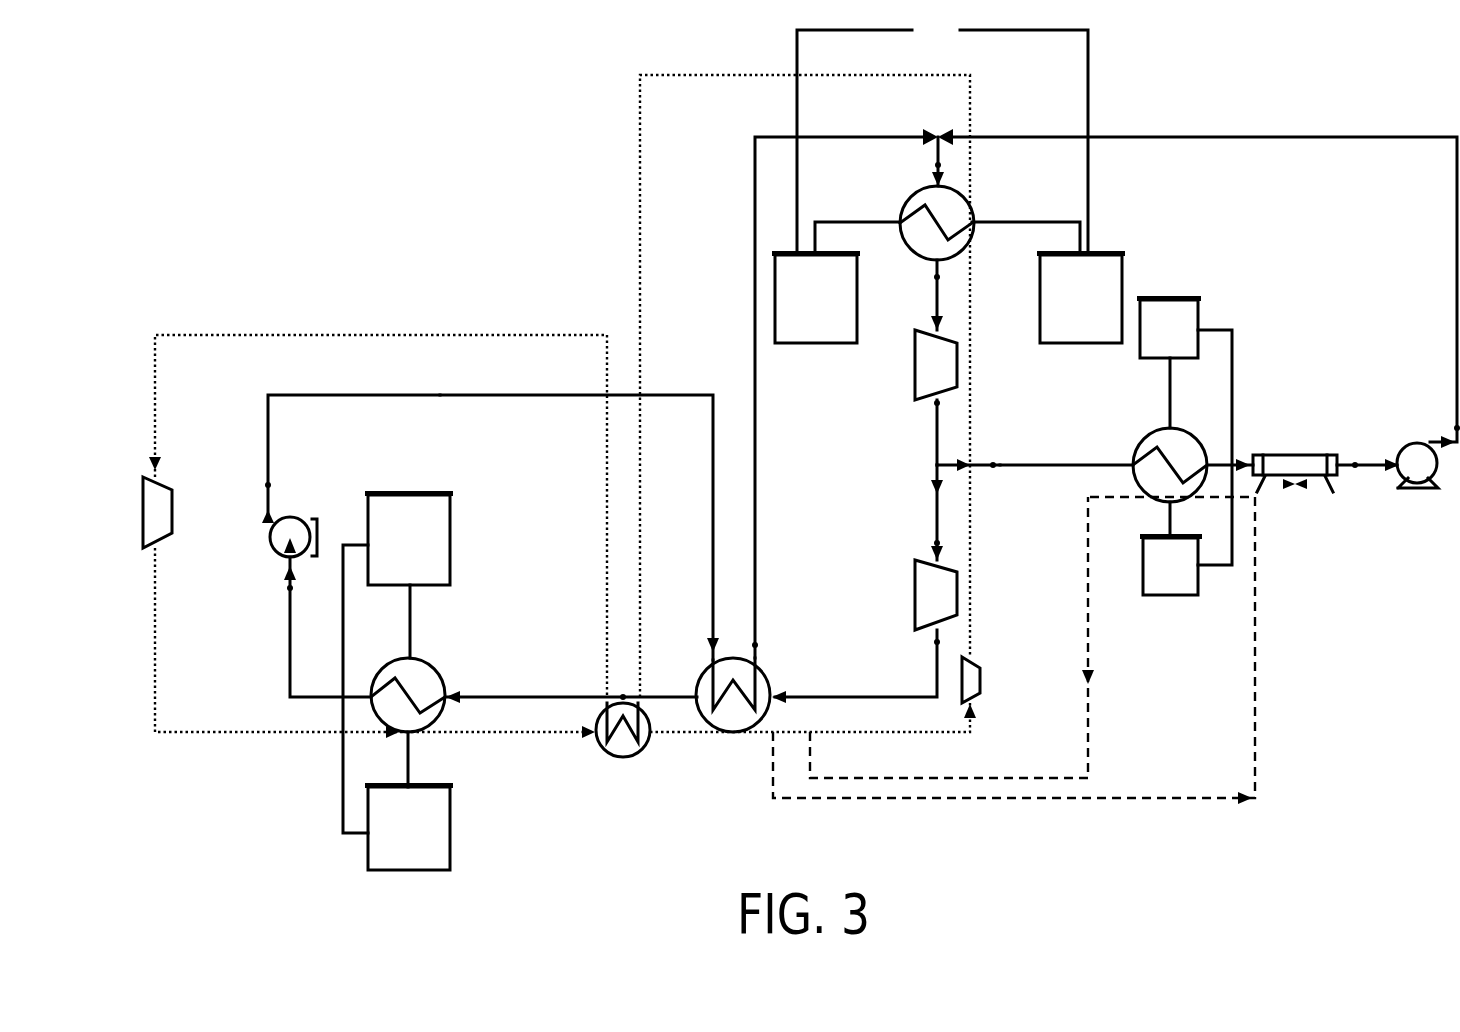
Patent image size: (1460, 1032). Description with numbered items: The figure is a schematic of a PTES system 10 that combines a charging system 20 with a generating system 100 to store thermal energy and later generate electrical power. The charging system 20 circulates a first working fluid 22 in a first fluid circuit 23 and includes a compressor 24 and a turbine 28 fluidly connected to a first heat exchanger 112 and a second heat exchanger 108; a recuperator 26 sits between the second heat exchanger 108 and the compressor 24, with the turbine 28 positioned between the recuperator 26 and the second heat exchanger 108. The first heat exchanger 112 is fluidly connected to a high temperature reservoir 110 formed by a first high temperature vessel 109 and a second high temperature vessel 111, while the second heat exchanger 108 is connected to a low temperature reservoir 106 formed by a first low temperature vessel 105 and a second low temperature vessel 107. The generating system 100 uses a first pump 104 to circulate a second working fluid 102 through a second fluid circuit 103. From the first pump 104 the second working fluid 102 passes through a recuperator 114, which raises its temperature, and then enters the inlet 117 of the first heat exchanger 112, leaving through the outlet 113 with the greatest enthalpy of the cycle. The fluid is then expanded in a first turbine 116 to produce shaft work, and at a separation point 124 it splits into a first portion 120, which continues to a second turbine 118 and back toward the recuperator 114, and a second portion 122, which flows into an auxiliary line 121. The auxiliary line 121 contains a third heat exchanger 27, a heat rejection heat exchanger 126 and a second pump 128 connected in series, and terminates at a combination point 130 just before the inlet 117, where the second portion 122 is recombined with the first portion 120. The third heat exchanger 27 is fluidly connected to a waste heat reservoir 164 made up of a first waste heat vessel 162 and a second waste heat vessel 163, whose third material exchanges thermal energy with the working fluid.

The PTES system 10 is at (303, 96).
The generating system 100 is at (338, 255).
The charging system 20 is at (645, 65).
The turbine 28 is at (143, 505).
The first pump 104 is at (272, 525).
The second working fluid 102 is at (355, 393).
The second fluid circuit 103 is at (440, 393).
The first low temperature vessel 105 is at (452, 497).
The low temperature reservoir 106 is at (343, 790).
The second low temperature vessel 107 is at (452, 787).
The second heat exchanger 108 is at (430, 665).
The recuperator 26 is at (620, 757).
The recuperator 114 is at (757, 672).
The auxiliary line 121 is at (1280, 137).
The combination point 130 is at (945, 130).
The high temperature reservoir 110 is at (942, 136).
The inlet 117 is at (945, 190).
The first heat exchanger 112 is at (902, 213).
The outlet 113 is at (930, 255).
The first high temperature vessel 109 is at (815, 343).
The second high temperature vessel 111 is at (1080, 345).
The first turbine 116 is at (957, 352).
The separation point 124 is at (935, 463).
The second portion 122 is at (945, 463).
The first portion 120 is at (935, 512).
The second turbine 118 is at (965, 560).
The compressor 24 is at (980, 680).
The first working fluid 22 is at (860, 733).
The first fluid circuit 23 is at (950, 733).
The first waste heat vessel 162 is at (1198, 312).
The waste heat reservoir 164 is at (1232, 395).
The third heat exchanger 27 is at (1135, 447).
The second waste heat vessel 163 is at (1170, 597).
The heat rejection heat exchanger 126 is at (1318, 475).
The second pump 128 is at (1420, 475).